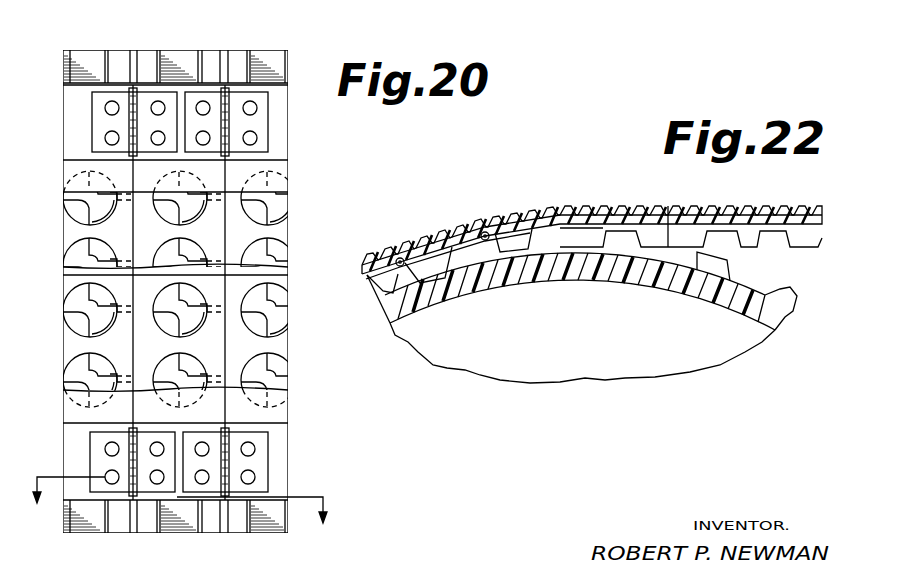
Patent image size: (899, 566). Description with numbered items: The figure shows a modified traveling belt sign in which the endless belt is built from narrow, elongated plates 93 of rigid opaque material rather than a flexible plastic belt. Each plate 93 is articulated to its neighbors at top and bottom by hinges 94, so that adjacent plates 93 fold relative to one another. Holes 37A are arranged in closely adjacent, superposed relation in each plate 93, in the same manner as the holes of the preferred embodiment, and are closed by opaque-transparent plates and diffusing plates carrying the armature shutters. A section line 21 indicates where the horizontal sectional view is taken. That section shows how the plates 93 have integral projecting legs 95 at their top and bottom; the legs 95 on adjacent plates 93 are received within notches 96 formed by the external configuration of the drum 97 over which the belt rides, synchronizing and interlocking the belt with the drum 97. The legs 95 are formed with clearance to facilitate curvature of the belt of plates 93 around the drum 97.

In FIG. 20, the plates 93 is at (280, 137).
In FIG. 22, the plates 93 is at (538, 213).
In FIG. 20, the hinges 94 is at (240, 95).
In FIG. 20, the holes 37A is at (270, 172).
In FIG. 20, the section line 21- 21 is at (180, 517).
In FIG. 22, the projecting legs 95 is at (418, 270).
In FIG. 22, the notches 96 is at (680, 258).
In FIG. 22, the drum 97 is at (597, 270).